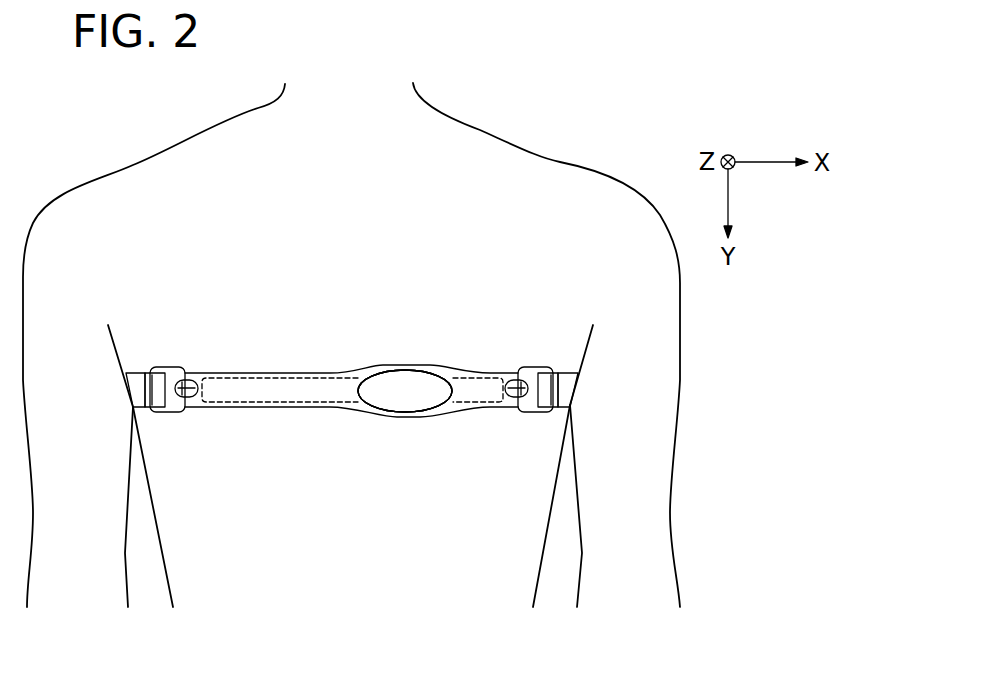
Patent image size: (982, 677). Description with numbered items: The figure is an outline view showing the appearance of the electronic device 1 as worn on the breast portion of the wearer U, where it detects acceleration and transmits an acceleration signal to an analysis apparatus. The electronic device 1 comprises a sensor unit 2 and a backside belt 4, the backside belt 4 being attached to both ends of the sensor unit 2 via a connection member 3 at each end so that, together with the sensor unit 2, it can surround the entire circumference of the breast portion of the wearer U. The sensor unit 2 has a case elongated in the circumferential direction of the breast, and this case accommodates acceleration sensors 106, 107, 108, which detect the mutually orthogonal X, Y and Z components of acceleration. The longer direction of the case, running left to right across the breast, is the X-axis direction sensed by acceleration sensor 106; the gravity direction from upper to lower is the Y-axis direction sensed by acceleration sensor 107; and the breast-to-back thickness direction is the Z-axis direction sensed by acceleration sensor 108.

The electronic device 1 is at (393, 352).
The sensor unit 2 is at (304, 366).
The connection member 3 is at (167, 414).
The backside belt 4 is at (144, 367).
The acceleration sensor 106 is at (430, 387).
The acceleration sensor 107 is at (405, 391).
The acceleration sensor 108 is at (405, 391).
The wearer U is at (562, 161).